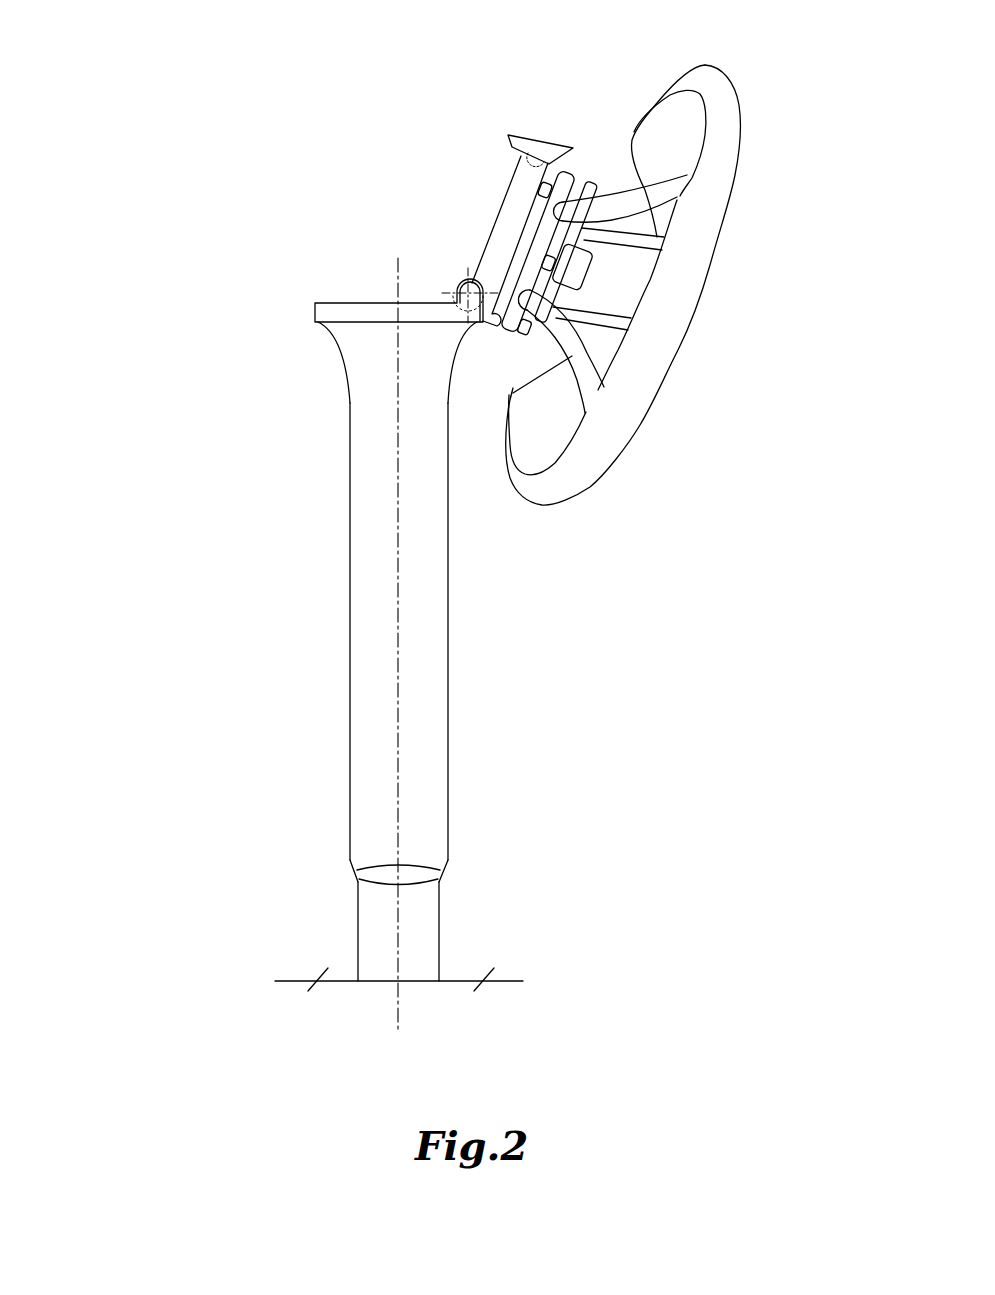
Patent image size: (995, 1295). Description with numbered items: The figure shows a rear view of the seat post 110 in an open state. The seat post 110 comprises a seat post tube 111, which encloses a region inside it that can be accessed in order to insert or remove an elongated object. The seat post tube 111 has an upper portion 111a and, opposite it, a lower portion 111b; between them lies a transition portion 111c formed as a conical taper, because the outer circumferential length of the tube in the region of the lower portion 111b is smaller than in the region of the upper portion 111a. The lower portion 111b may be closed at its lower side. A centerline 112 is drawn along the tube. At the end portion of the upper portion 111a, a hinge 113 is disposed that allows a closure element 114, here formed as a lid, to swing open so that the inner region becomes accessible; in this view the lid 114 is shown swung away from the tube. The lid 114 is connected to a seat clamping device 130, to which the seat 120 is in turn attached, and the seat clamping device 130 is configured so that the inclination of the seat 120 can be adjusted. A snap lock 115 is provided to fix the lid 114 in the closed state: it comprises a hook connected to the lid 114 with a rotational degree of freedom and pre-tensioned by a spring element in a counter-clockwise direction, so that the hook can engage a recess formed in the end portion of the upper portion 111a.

The seat post 110 is at (178, 581).
The seat post tube 111 is at (448, 612).
The upper portion 111a is at (512, 744).
The lower portion 111b is at (482, 936).
The transition portion 111c is at (367, 873).
The column axis 112 is at (398, 477).
The hinge 113 is at (460, 282).
The closure element 114 is at (507, 208).
The snap lock 115 is at (545, 148).
The seat 120 is at (683, 365).
The seat clamping device 130 is at (573, 177).